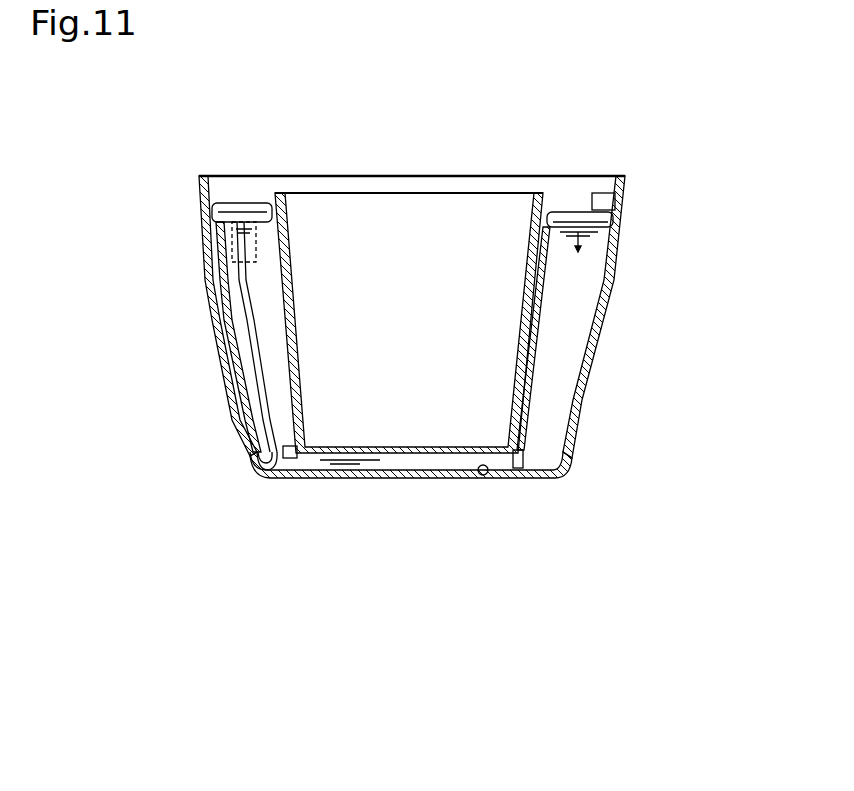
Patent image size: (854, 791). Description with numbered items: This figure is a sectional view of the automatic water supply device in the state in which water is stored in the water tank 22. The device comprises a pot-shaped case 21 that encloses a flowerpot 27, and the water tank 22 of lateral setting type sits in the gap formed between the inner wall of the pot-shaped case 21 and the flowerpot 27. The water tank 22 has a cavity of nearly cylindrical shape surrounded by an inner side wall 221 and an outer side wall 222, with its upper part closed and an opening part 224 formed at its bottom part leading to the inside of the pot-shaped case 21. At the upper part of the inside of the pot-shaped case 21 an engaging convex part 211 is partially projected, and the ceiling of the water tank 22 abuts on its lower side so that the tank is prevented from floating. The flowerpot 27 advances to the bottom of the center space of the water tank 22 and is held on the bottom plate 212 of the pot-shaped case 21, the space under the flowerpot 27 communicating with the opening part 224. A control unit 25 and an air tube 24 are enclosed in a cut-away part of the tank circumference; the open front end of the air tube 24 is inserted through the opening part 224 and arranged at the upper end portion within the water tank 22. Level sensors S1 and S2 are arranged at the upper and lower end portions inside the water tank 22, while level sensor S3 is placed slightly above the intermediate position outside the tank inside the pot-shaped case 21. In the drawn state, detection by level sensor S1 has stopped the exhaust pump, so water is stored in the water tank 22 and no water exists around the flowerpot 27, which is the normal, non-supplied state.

The pot-shaped case 21 is at (603, 285).
The engaging convex part 211 is at (604, 202).
The bottom plate 212 is at (482, 476).
The water tank 22 is at (237, 298).
The inner side wall 221 is at (540, 380).
The outer side wall 222 is at (598, 336).
The opening part 224 is at (292, 462).
The air tube 24 is at (218, 262).
The control unit 25 is at (230, 203).
The flowerpot 27 is at (421, 193).
The level sensor S1 is at (263, 212).
The level sensor S2 is at (262, 463).
The level sensor S3 is at (550, 262).